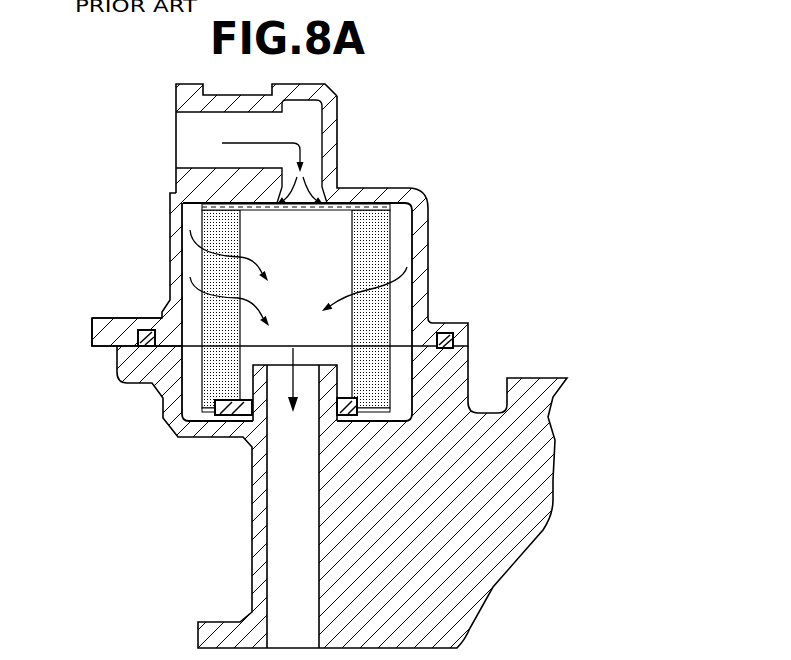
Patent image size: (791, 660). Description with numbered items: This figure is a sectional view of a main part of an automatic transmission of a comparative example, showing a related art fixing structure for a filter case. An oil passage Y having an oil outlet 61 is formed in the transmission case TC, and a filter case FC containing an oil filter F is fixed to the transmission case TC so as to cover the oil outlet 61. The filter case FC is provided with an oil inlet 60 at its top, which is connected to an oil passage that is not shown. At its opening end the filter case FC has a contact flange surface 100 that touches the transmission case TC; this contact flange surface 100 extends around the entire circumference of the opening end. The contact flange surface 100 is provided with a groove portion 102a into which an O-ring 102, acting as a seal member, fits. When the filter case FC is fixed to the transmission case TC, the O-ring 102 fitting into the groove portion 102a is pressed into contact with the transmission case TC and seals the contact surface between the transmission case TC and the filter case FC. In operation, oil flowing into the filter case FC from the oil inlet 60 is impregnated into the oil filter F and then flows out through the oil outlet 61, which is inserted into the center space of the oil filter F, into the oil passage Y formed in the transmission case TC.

The oil inlet 60 is at (176, 137).
The filter case FC is at (426, 180).
The oil filter F is at (375, 250).
The oil outlet 61 is at (305, 350).
The contact flange surface 100 is at (120, 318).
The O-ring 102 is at (455, 344).
The groove portion 102a is at (140, 338).
The transmission case TC is at (533, 440).
The oil passage Y is at (290, 537).